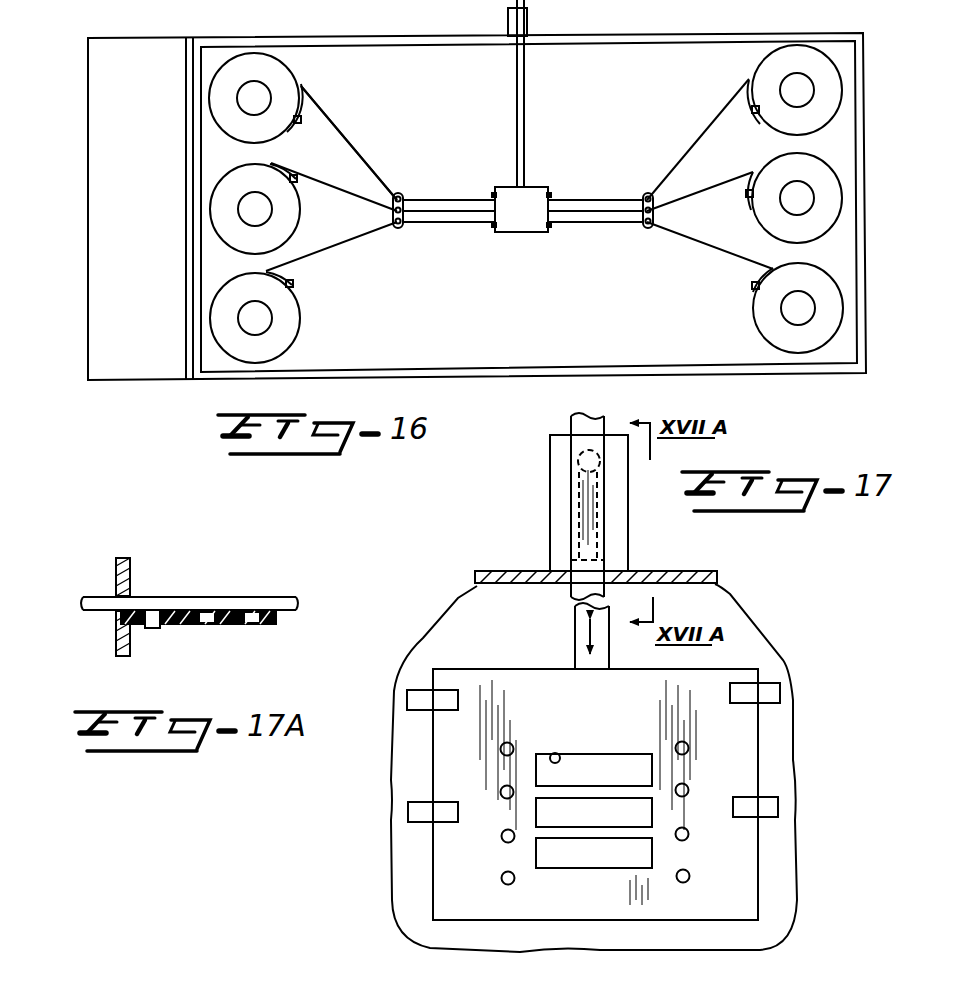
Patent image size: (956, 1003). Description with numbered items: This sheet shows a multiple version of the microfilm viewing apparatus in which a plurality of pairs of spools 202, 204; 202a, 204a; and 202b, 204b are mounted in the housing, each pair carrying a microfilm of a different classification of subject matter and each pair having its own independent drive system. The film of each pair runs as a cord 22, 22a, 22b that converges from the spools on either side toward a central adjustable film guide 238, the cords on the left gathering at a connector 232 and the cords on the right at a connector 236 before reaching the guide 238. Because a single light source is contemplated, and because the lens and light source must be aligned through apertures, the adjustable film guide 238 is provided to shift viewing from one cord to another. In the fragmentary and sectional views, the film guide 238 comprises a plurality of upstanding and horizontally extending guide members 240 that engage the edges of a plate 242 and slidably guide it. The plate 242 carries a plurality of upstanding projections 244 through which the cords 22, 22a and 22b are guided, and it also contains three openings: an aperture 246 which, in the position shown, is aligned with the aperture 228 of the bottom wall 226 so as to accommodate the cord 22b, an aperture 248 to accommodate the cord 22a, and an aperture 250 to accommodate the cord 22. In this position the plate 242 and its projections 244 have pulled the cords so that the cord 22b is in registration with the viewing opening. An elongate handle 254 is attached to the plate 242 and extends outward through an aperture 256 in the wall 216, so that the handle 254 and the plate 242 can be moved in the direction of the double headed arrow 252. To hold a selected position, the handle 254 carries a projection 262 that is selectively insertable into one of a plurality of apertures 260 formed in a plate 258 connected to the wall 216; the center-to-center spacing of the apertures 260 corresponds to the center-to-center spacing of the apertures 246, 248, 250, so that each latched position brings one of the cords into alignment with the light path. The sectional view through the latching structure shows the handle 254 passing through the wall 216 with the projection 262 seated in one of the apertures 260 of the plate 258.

In FIG. 16, the cord 22 is at (323, 250).
In FIG. 16, the cord 22a is at (330, 183).
In FIG. 16, the cord 22b is at (700, 136).
In FIG. 16, the spool 202 is at (303, 327).
In FIG. 16, the spool 202a is at (320, 157).
In FIG. 16, the spool 202b is at (298, 70).
In FIG. 16, the spool 204 is at (753, 311).
In FIG. 16, the spool 204a is at (834, 162).
In FIG. 16, the spool 204b is at (835, 117).
In FIG. 16, the wall 216 is at (617, 43).
In FIG. 17, the wall 216 is at (700, 570).
In FIG. 17A, the wall 216 is at (115, 562).
In FIG. 16, the bottom wall 226 is at (340, 138).
In FIG. 17, the aperture 228 is at (610, 767).
In FIG. 16, the cable connector 232 is at (403, 195).
In FIG. 16, the cable connector 236 is at (645, 193).
In FIG. 16, the adjustable film guide 238 is at (494, 237).
In FIG. 17, the adjustable film guide 238 is at (426, 780).
In FIG. 17, the guide members 240 is at (410, 688).
In FIG. 17, the plate 242 is at (738, 728).
In FIG. 17, the upstanding projections 244 is at (501, 790).
In FIG. 17, the aperture 246 is at (558, 754).
In FIG. 17, the aperture 248 is at (567, 823).
In FIG. 17, the aperture 250 is at (560, 866).
In FIG. 17, the double headed arrow 252 is at (577, 638).
In FIG. 16, the elongate handle 254 is at (525, 107).
In FIG. 17, the elongate handle 254 is at (572, 600).
In FIG. 17A, the elongate handle 254 is at (98, 599).
In FIG. 17, the aperture 256 is at (578, 568).
In FIG. 17A, the aperture 256 is at (131, 604).
In FIG. 16, the plate 258 is at (528, 19).
In FIG. 17, the plate 258 is at (628, 527).
In FIG. 17A, the plate 258 is at (137, 626).
In FIG. 17, the apertures 260 is at (576, 533).
In FIG. 17A, the apertures 260 is at (217, 583).
In FIG. 17A, the projection 262 is at (152, 628).